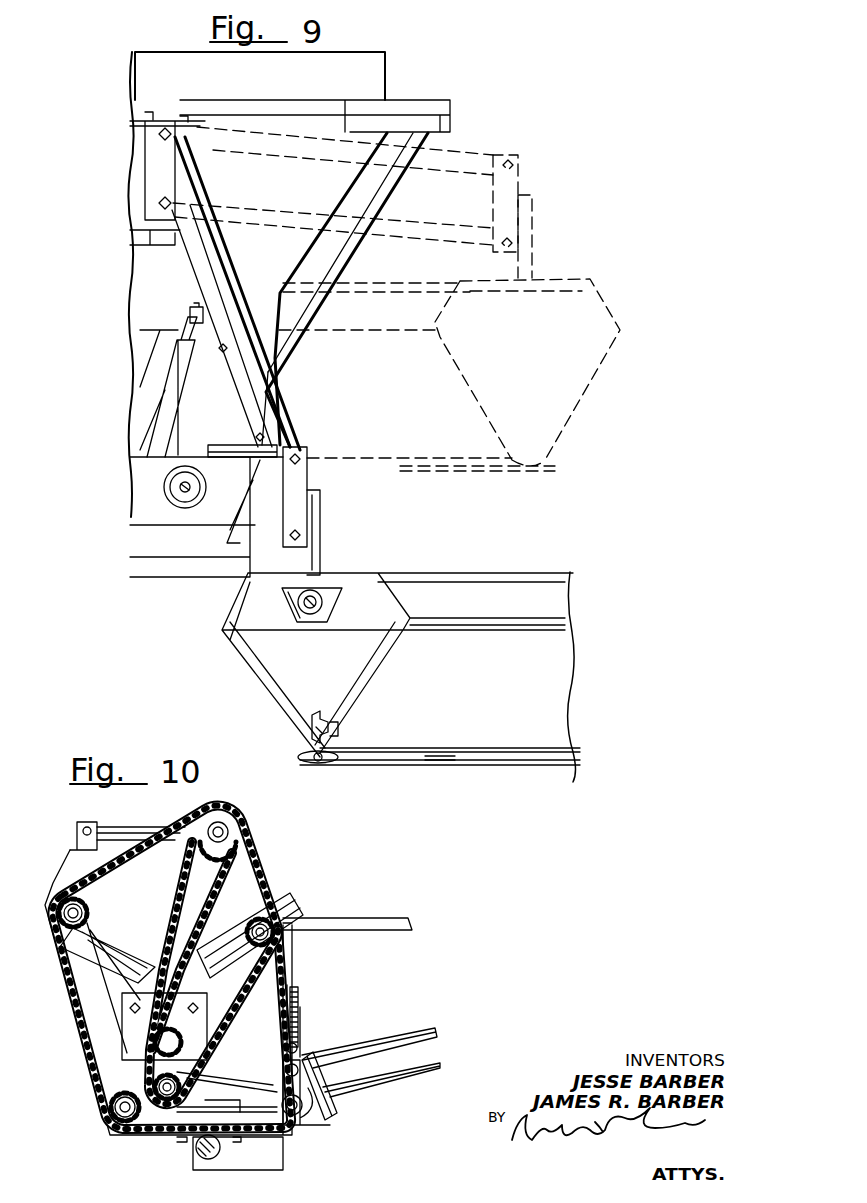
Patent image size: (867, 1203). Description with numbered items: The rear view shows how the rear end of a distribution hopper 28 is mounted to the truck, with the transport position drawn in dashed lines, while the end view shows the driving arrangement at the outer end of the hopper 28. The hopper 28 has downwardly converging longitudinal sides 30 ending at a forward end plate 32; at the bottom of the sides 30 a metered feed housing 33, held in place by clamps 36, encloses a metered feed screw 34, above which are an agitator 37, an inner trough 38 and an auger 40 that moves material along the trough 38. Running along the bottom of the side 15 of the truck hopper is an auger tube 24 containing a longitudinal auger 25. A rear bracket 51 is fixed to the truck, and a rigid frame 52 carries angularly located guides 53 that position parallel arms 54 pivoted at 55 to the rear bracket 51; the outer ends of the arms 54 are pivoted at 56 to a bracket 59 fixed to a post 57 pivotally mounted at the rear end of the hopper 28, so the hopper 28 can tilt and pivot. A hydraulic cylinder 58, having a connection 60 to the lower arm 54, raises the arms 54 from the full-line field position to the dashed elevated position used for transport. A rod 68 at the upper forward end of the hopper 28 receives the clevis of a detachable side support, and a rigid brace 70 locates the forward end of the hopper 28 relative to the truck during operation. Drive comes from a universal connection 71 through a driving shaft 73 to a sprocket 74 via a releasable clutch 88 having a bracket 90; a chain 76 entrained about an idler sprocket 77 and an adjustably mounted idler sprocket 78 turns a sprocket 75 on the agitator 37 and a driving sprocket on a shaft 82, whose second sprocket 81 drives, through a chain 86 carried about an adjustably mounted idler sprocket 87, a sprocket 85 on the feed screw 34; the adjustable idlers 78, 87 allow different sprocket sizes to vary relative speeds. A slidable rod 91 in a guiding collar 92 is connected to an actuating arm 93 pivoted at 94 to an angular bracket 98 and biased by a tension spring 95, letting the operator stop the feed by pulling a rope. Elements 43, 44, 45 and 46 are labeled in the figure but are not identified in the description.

In FIG. 9, the side 15 is at (352, 193).
In FIG. 9, the auger tube 24 is at (205, 490).
In FIG. 9, the longitudinal auger 25 is at (180, 490).
In FIG. 9, the distribution hopper 28 is at (572, 400).
In FIG. 10, the distribution hopper 28 is at (66, 858).
In FIG. 9, the longitudinal sides 30 is at (400, 462).
In FIG. 10, the forward end plate 32 is at (130, 898).
In FIG. 9, the metered feed housing 33 is at (468, 470).
In FIG. 9, the metered feed screw 34 is at (312, 762).
In FIG. 9, the clamps 36 is at (448, 762).
In FIG. 9, the agitator 37 is at (326, 718).
In FIG. 9, the inner trough 38 is at (340, 615).
In FIG. 9, the auger 40 is at (310, 618).
In FIG. 10, the mounting lug 43 is at (178, 1140).
In FIG. 10, the shaft 44 is at (196, 1152).
In FIG. 10, the bracket 45 is at (213, 1117).
In FIG. 10, the housing 46 is at (285, 1162).
In FIG. 9, the rear bracket 51 is at (155, 173).
In FIG. 9, the rigid frame 52 is at (356, 105).
In FIG. 9, the guides 53 is at (318, 318).
In FIG. 9, the parallel arms 54 is at (251, 153).
In FIG. 9, the pivot 55 is at (165, 118).
In FIG. 9, the pivot 56 is at (302, 458).
In FIG. 9, the post 57 is at (322, 540).
In FIG. 9, the hydraulic cylinder 58 is at (178, 385).
In FIG. 9, the bracket 59 is at (310, 513).
In FIG. 9, the connection 60 is at (190, 312).
In FIG. 10, the rod 68 is at (135, 828).
In FIG. 10, the rigid brace 70 is at (371, 922).
In FIG. 10, the universal connection 71 is at (407, 1080).
In FIG. 10, the driving shaft 73 is at (260, 1106).
In FIG. 10, the sprocket 74 is at (310, 1122).
In FIG. 10, the sprocket 75 is at (185, 1035).
In FIG. 10, the chain 76 is at (235, 1075).
In FIG. 10, the idler sprocket 77 is at (110, 1128).
In FIG. 10, the adjustably mounted idler sprocket 78 is at (62, 922).
In FIG. 10, the second sprocket 81 is at (240, 838).
In FIG. 10, the shaft 82 is at (230, 832).
In FIG. 10, the sprocket 85 is at (150, 1080).
In FIG. 10, the chain 86 is at (243, 1003).
In FIG. 10, the adjustably mounted idler sprocket 87 is at (253, 918).
In FIG. 10, the releasable clutch 88 is at (292, 1117).
In FIG. 10, the bracket 90 is at (338, 1108).
In FIG. 10, the slidable rod 91 is at (298, 1047).
In FIG. 10, the guiding collar 92 is at (300, 1040).
In FIG. 10, the actuating arm 93 is at (297, 993).
In FIG. 10, the pivot 94 is at (302, 1016).
In FIG. 10, the tension spring 95 is at (282, 980).
In FIG. 10, the angular bracket 98 is at (282, 1015).